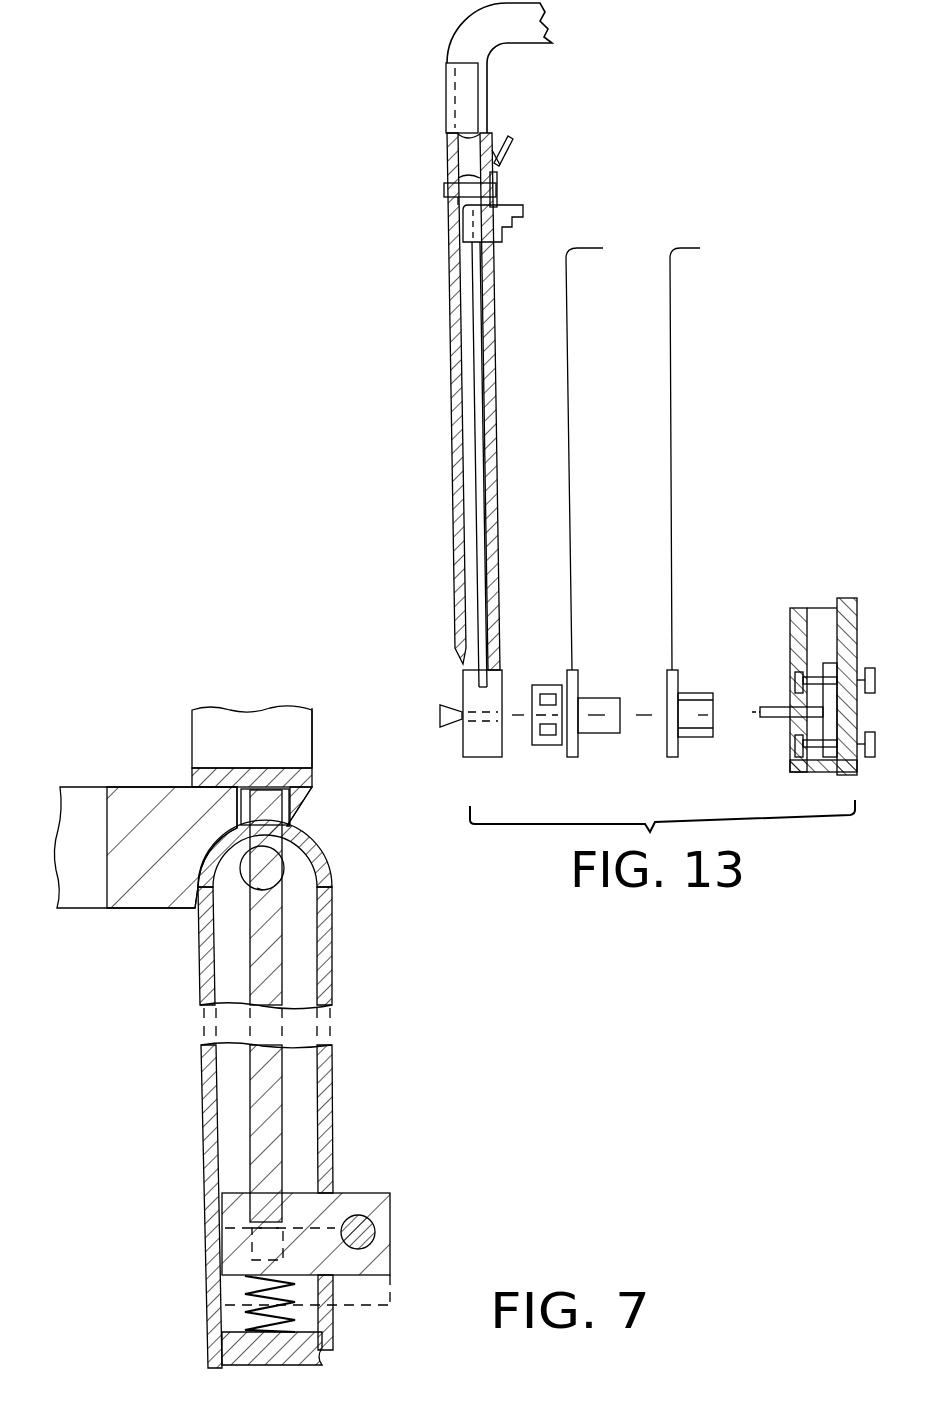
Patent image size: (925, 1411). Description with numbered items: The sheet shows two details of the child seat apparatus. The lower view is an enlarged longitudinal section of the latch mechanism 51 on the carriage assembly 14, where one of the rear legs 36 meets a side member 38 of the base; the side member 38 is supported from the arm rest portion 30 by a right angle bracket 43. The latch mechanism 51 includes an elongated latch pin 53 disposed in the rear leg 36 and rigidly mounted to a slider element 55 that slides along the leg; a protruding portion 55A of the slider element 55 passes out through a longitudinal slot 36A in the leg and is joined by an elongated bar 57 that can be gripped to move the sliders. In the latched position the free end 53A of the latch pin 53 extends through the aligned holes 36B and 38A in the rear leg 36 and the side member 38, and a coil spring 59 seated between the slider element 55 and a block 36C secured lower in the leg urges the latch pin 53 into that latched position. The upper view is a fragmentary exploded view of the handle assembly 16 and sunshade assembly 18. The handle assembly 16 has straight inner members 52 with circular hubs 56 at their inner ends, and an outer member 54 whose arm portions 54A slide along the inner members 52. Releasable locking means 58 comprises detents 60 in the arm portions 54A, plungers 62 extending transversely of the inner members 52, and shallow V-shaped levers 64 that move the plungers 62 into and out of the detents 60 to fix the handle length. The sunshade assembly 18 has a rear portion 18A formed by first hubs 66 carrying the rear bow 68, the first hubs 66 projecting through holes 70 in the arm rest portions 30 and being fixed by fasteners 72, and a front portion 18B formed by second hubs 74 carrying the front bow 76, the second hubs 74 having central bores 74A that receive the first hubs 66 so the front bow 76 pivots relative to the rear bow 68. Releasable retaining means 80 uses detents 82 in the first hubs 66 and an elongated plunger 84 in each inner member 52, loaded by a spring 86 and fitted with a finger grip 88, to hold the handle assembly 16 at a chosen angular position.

In FIG. 7, the carriage assembly 14 is at (141, 724).
In FIG. 13, the handle assembly 16 is at (406, 67).
In FIG. 13, the sunshade assembly 18 is at (768, 530).
In FIG. 13, the rear portion 18A is at (593, 237).
In FIG. 13, the front portion 18B is at (700, 245).
In FIG. 13, the arm rest portions 30 is at (818, 600).
In FIG. 7, the rear legs 36 is at (203, 982).
In FIG. 7, the longitudinal slot 36A is at (333, 1170).
In FIG. 7, the hole 36B is at (284, 851).
In FIG. 7, the block 36C is at (333, 1350).
In FIG. 7, the side members 38 is at (67, 787).
In FIG. 7, the hole 38A is at (255, 790).
In FIG. 7, the right angle brackets 43 is at (312, 712).
In FIG. 7, the latch mechanism 51 is at (350, 960).
In FIG. 13, the inner members 52 is at (497, 480).
In FIG. 7, the latch pin 53 is at (283, 978).
In FIG. 7, the free end 53A is at (292, 822).
In FIG. 13, the outer member 54 is at (550, 43).
In FIG. 13, the arm portions 54A is at (447, 353).
In FIG. 7, the slider element 55 is at (230, 1219).
In FIG. 7, the protruding portion 55A is at (390, 1208).
In FIG. 13, the circular hubs 56 is at (488, 758).
In FIG. 7, the elongated bar 57 is at (377, 1227).
In FIG. 13, the releasable locking means 58 is at (512, 162).
In FIG. 7, the coil spring 59 is at (228, 1298).
In FIG. 13, the detents 60 is at (455, 189).
In FIG. 13, the plungers 62 is at (450, 163).
In FIG. 13, the V-shaped levers 64 is at (509, 139).
In FIG. 13, the first hubs 66 is at (580, 699).
In FIG. 13, the rear bow 68 is at (570, 322).
In FIG. 13, the holes 70 is at (801, 660).
In FIG. 13, the fasteners 72 is at (795, 745).
In FIG. 13, the second hubs 74 is at (695, 693).
In FIG. 13, the central bores 74A is at (706, 738).
In FIG. 13, the front bow 76 is at (676, 397).
In FIG. 13, the releasable retaining means 80 is at (462, 280).
In FIG. 13, the detents 82 is at (538, 730).
In FIG. 13, the elongated plunger 84 is at (474, 438).
In FIG. 13, the springs 86 is at (458, 213).
In FIG. 13, the finger grips 88 is at (505, 210).